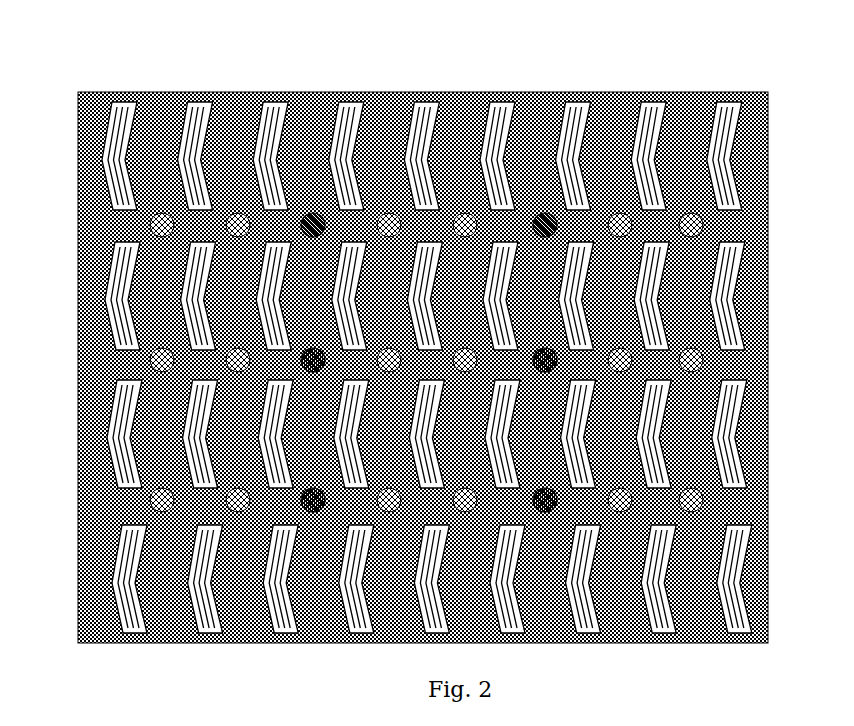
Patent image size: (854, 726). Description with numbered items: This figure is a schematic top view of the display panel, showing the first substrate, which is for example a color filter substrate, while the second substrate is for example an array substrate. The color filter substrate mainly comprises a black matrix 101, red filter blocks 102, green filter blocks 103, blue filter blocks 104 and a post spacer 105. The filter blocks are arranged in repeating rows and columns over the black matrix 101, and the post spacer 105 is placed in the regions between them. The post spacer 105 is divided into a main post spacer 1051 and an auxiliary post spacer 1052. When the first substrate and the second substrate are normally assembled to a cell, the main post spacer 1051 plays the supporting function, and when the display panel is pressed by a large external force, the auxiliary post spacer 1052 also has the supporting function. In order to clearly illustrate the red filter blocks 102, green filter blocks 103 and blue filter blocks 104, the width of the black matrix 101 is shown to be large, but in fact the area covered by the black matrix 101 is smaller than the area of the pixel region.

The black matrix 101 is at (755, 141).
The red filter blocks 102 is at (117, 115).
The green filter blocks 103 is at (197, 115).
The blue filter blocks 104 is at (276, 115).
The post spacer 105 is at (606, 140).
The main post spacer 1051 is at (545, 212).
The auxiliary post spacer 1052 is at (620, 212).